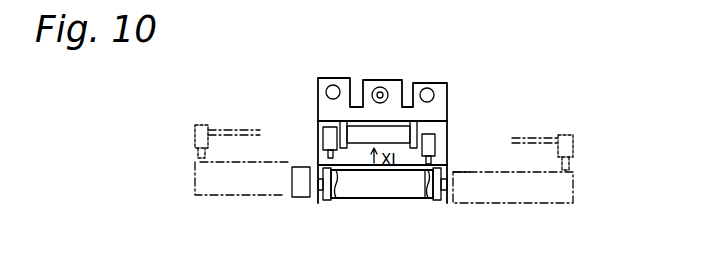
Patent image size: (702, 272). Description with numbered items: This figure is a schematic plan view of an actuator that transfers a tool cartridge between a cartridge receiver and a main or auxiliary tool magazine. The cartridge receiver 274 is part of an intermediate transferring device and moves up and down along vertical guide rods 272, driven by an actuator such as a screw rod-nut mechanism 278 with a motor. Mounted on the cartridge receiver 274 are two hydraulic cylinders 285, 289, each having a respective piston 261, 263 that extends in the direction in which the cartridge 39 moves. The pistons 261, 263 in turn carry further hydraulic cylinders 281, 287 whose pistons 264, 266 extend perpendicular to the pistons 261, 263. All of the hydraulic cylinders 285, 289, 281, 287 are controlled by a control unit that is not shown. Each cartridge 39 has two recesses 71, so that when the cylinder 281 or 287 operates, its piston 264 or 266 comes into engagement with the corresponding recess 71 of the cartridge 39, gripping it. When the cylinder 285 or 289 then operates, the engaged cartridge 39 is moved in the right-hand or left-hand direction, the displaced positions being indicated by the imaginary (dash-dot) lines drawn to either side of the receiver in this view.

The hydraulic cylinder 285 is at (373, 130).
The hydraulic cylinder 289 is at (330, 88).
The vertical guide rods 272 is at (333, 85).
The screw rod-nut mechanism 278 is at (381, 87).
The cartridge receiver 274 is at (432, 113).
The piston 261 is at (435, 137).
The piston 263 is at (355, 121).
The hydraulic cylinder 287 is at (328, 138).
The cartridge 39 is at (217, 185).
The recess 71 is at (333, 200).
The piston 264 is at (432, 163).
The piston 266 is at (317, 155).
The hydraulic cylinder 281 is at (462, 170).